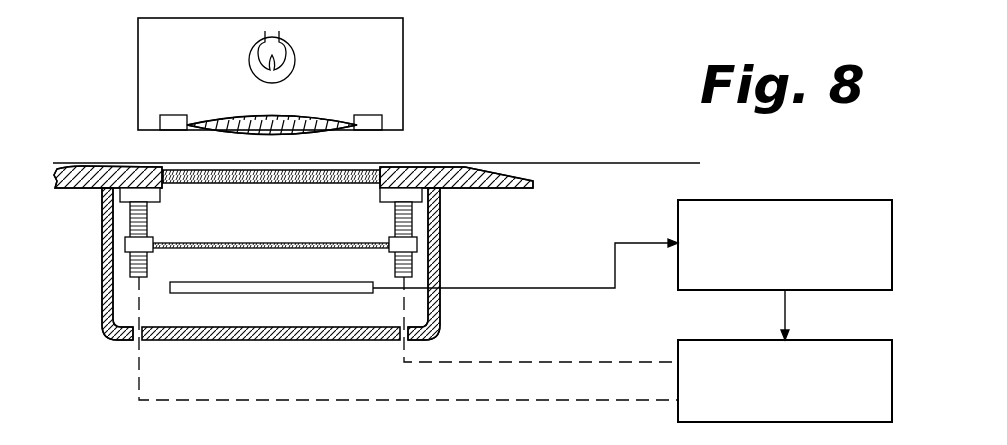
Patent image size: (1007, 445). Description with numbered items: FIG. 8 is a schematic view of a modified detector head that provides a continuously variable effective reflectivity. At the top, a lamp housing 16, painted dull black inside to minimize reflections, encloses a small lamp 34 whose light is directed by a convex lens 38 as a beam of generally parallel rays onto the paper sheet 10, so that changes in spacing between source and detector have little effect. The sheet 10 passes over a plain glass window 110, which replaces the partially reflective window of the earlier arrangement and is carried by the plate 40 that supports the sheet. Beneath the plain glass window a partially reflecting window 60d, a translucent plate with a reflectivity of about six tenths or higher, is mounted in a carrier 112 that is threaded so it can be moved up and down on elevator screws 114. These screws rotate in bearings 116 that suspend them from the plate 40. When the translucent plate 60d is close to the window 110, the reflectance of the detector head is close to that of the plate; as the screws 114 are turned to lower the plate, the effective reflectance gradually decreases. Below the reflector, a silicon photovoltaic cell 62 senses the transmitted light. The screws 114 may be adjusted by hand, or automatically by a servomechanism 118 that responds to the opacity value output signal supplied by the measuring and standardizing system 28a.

The paper sheet 10 is at (596, 163).
The lamp housing 16 is at (138, 45).
The lamp 34 is at (249, 60).
The convex lens 38 is at (318, 111).
The plate 40 is at (468, 188).
The plain glass window 110 is at (242, 184).
The carrier 112 is at (125, 245).
The elevator screws 114 is at (132, 266).
The bearings 116 is at (124, 198).
The partially reflecting window 60d is at (249, 244).
The silicon photovoltaic cell 62 is at (242, 293).
The measuring and standardizing system 28a is at (690, 200).
The servomechanism 118 is at (692, 340).